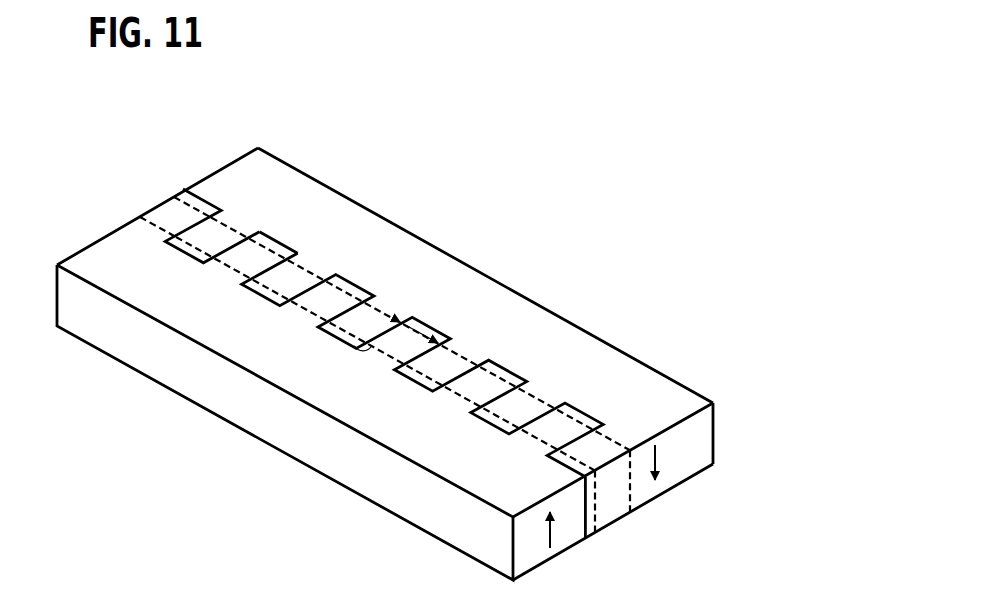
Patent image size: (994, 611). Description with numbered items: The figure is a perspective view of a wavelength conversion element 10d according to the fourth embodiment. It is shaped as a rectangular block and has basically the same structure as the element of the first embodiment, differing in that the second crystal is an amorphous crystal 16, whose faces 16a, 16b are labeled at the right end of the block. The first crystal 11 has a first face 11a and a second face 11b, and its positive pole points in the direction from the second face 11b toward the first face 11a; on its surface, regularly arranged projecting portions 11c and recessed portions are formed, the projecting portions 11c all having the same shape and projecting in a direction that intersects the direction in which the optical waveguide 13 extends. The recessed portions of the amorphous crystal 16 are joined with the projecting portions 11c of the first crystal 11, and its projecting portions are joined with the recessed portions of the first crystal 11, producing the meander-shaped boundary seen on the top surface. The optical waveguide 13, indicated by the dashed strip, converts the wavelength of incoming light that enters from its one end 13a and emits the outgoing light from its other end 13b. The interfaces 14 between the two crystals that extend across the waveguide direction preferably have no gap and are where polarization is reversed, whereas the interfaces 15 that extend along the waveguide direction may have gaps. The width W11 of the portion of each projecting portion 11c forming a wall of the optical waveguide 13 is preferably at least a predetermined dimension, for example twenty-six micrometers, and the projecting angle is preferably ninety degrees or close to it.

The wavelength conversion element 10d is at (548, 188).
The first crystal 11 is at (287, 490).
The first face 11a is at (447, 448).
The second face 11b is at (390, 510).
The projecting portions 11c is at (558, 427).
The optical waveguide 13 is at (232, 238).
The one end 13a is at (158, 203).
The other end 13b is at (612, 488).
The interfaces 14 is at (213, 218).
The interfaces 15 is at (283, 238).
The amorphous crystal 16 is at (796, 387).
The lower side face edge 16a is at (697, 475).
The upper side face edge 16b is at (677, 395).
The width W11 is at (402, 323).